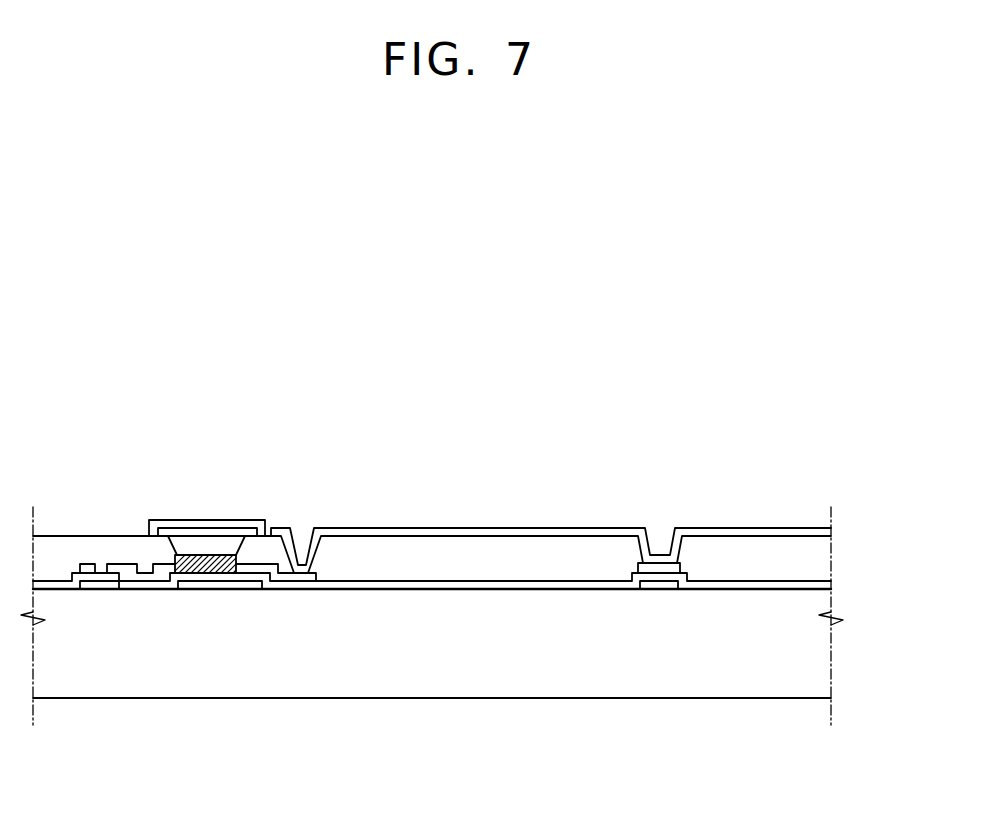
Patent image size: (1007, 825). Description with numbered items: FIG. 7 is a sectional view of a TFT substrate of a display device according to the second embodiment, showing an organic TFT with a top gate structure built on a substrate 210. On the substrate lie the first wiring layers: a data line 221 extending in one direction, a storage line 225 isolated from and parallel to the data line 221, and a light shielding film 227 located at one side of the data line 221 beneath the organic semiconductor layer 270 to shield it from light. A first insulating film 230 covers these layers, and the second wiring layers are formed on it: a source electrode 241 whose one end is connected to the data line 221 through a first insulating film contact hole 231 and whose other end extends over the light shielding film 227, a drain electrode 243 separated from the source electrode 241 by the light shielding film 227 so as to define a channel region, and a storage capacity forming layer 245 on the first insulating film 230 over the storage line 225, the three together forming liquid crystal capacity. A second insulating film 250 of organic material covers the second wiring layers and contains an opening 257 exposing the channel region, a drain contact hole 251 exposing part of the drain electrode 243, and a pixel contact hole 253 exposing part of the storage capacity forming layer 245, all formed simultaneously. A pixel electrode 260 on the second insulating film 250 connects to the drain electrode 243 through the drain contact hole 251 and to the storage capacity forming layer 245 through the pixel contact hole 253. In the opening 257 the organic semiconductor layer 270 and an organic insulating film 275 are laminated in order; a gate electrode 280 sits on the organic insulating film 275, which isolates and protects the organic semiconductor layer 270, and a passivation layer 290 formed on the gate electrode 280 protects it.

The substrate 210 is at (825, 661).
The data line 221 is at (102, 588).
The storage line 225 is at (672, 586).
The light shielding film 227 is at (195, 584).
The first insulating film 230 is at (407, 583).
The first insulating film contact hole 231 is at (101, 556).
The source electrode 241 is at (149, 576).
The drain electrode 243 is at (305, 576).
The storage capacity forming layer 245 is at (651, 570).
The second insulating film 250 is at (825, 558).
The drain contact hole 251 is at (300, 524).
The pixel contact hole 253 is at (660, 524).
The opening 257 is at (242, 565).
The pixel electrode 260 is at (406, 528).
The organic semiconductor layer 270 is at (222, 574).
The organic insulating film 275 is at (227, 536).
The gate electrode 280 is at (197, 528).
The passivation layer 290 is at (163, 520).